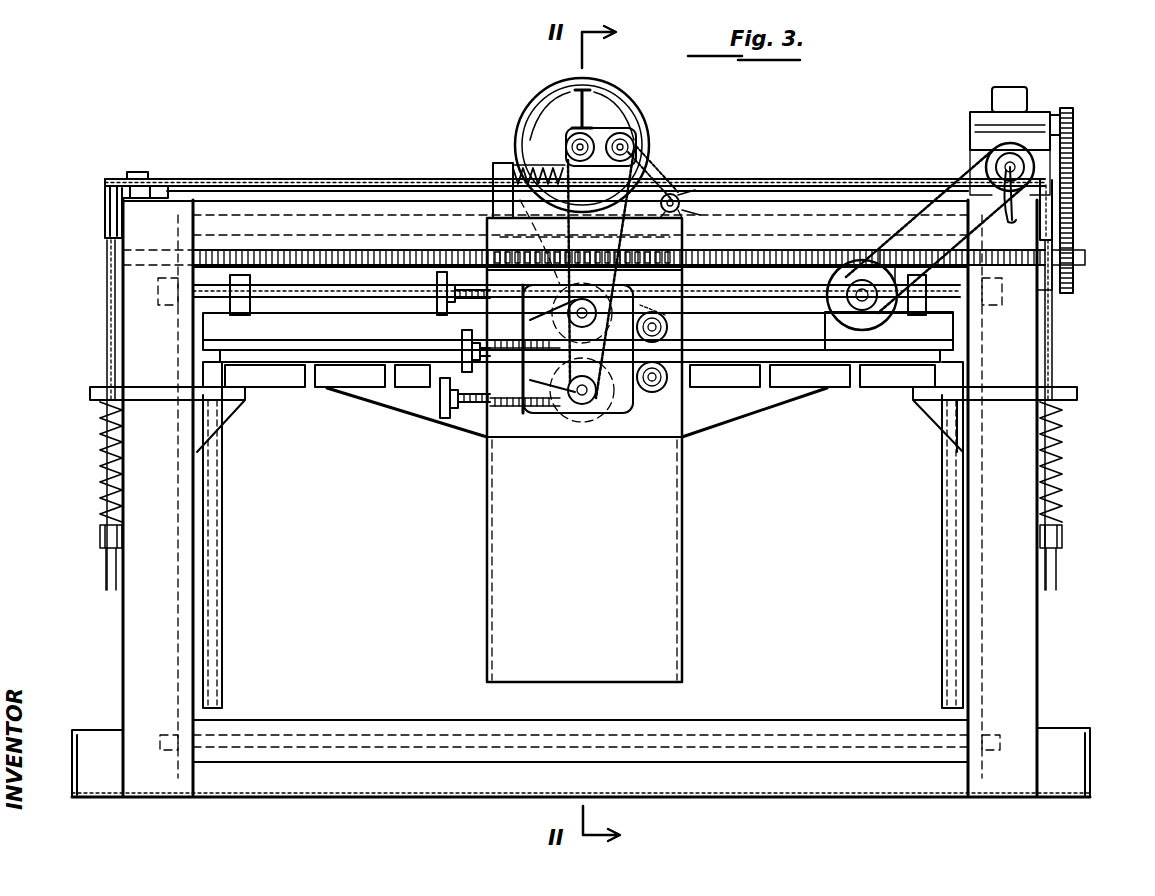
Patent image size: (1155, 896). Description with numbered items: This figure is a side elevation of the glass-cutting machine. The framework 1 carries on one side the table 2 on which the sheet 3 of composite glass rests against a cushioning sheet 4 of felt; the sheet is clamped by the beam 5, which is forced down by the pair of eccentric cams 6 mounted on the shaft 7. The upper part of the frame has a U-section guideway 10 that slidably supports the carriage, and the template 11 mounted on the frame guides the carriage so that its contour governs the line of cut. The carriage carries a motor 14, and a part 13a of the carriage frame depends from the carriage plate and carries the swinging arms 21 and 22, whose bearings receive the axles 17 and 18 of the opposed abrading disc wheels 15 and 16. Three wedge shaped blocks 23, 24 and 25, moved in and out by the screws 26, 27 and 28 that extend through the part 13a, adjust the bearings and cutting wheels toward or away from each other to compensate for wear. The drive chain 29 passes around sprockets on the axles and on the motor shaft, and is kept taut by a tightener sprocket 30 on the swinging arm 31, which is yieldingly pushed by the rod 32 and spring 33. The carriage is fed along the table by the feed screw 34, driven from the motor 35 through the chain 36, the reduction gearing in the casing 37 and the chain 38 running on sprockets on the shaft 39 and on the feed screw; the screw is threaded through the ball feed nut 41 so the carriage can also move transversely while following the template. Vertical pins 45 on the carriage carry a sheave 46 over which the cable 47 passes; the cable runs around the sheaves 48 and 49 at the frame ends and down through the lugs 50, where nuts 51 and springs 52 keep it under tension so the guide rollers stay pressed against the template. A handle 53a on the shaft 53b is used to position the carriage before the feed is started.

The framework 1 is at (135, 625).
The table 2 is at (355, 365).
The sheet 3 is at (357, 350).
The cushioning sheet 4 is at (242, 362).
The beam 5 is at (205, 333).
The eccentric cams 6 is at (250, 300).
The shaft 7 is at (325, 290).
The guideway 10 is at (364, 205).
The template 11 is at (866, 195).
The part of the carriage frame 13a is at (527, 425).
The motor 14 is at (548, 95).
The disc wheel 15 is at (586, 268).
The disc wheel 16 is at (610, 415).
The axle 17 is at (560, 290).
The axle 18 is at (590, 405).
The swinging arm 21 is at (668, 308).
The swinging arm 22 is at (662, 352).
The wedge shaped block 23 is at (512, 278).
The wedge shaped block 24 is at (506, 326).
The wedge shaped block 25 is at (506, 381).
The screw 26 is at (437, 305).
The screw 27 is at (462, 348).
The screw 28 is at (446, 395).
The drive chain 29 is at (592, 133).
The sprocket 30 is at (628, 136).
The swinging arm 31 is at (652, 172).
The rod 32 is at (538, 200).
The spring 33 is at (525, 165).
The feed screw 34 is at (702, 250).
The motor 35 is at (878, 318).
The chain 36 is at (985, 168).
The casing 37 is at (1010, 95).
The chain 38 is at (1074, 158).
The shaft 39 is at (1072, 125).
The ball feed nut 41 is at (640, 248).
The vertical pins 45 is at (700, 210).
The sheave 46 is at (680, 200).
The cable 47 is at (268, 182).
The sheave 48 is at (152, 178).
The sheave 49 is at (105, 232).
The lugs 50 is at (92, 390).
The nuts 51 is at (98, 540).
The springs 52 is at (100, 458).
The handle 53a is at (1052, 215).
The shaft 53b is at (1000, 160).